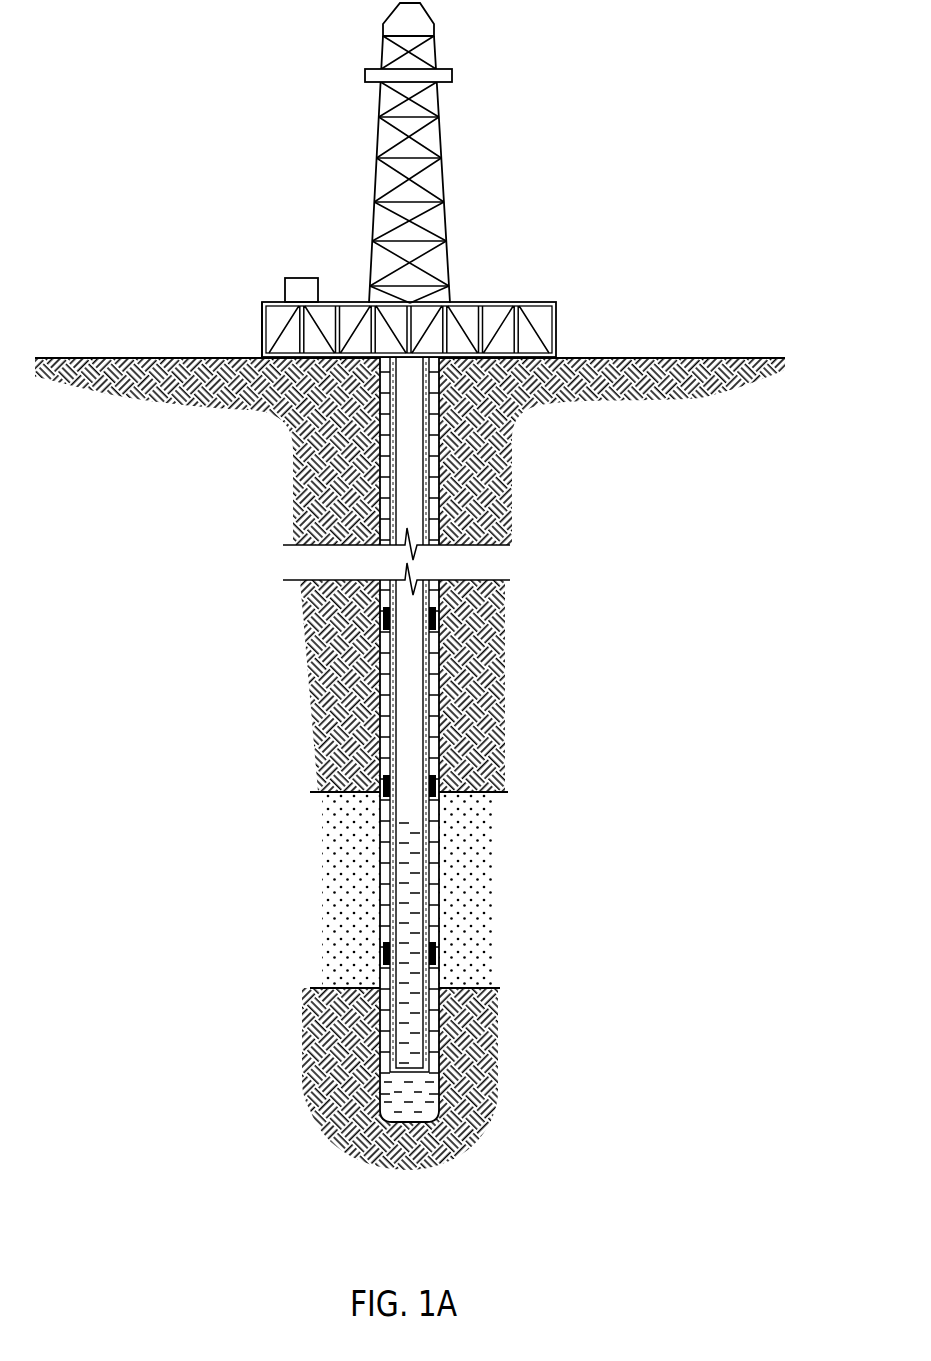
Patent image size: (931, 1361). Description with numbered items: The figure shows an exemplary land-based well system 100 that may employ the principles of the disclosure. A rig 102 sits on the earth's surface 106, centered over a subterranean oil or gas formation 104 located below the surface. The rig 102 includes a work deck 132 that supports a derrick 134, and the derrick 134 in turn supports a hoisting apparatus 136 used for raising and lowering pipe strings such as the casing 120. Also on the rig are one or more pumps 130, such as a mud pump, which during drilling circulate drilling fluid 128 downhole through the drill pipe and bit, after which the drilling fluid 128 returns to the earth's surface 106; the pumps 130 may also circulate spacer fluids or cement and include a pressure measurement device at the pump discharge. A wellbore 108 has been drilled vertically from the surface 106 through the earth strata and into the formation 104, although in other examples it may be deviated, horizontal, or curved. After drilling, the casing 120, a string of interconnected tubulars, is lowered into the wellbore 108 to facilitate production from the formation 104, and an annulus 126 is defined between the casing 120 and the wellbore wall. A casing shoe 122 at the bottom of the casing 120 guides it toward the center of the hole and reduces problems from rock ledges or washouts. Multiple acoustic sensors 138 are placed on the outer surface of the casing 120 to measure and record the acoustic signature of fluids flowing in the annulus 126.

The well system 100 is at (737, 92).
The rig 102 is at (556, 306).
The formation 104 is at (490, 897).
The surface 106 is at (680, 358).
The wellbore 108 is at (452, 470).
The casing 120 is at (429, 677).
The casing shoe 122 is at (410, 1078).
The annulus 126 is at (436, 740).
The drilling fluid 128 is at (416, 1020).
The pumps 130 is at (302, 278).
The work deck 132 is at (262, 318).
The derrick 134 is at (434, 42).
The hoisting apparatus 136 is at (420, 283).
The acoustic sensors 138 is at (436, 620).